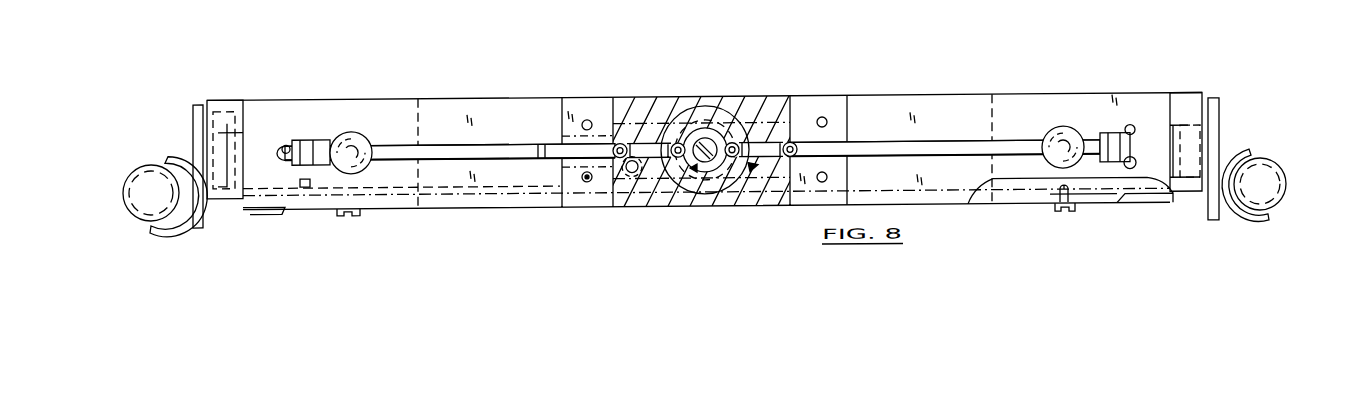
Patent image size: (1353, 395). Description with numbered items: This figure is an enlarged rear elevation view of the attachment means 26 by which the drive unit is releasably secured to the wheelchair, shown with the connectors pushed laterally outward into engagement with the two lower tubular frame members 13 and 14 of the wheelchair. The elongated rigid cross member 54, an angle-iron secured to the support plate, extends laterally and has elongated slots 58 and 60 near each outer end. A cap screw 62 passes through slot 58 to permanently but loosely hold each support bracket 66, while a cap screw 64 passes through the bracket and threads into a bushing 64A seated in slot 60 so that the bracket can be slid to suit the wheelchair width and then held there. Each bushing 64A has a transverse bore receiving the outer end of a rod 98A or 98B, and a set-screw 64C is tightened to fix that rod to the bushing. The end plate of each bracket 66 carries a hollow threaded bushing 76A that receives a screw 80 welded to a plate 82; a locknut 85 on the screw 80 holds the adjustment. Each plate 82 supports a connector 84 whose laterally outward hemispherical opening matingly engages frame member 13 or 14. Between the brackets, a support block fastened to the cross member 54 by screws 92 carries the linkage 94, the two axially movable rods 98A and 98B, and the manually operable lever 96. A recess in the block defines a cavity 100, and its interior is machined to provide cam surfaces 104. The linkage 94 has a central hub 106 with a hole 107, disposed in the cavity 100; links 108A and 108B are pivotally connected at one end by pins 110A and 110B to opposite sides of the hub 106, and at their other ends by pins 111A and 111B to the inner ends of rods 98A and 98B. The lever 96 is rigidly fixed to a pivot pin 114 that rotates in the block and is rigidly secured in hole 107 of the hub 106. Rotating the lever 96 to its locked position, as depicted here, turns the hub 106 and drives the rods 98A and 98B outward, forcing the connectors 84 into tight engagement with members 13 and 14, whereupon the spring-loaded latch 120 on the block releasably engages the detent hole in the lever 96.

The lower horizontal tubular frame member 13 is at (145, 162).
The lower horizontal tubular frame member 14 is at (1272, 162).
The attachment means 26 is at (902, 54).
The cross member 54 is at (470, 96).
The elongated slot 58 is at (273, 205).
The elongated slot 60 is at (286, 146).
The cap screw 62 is at (360, 212).
The cap screw 64 is at (357, 131).
The bushing 64A is at (363, 131).
The set-screw 64C is at (349, 130).
The support bracket 66 is at (241, 97).
The bushing 76A is at (262, 135).
The screw 80 is at (305, 184).
The plate 82 is at (196, 100).
The connector 84 is at (168, 150).
The locknut 85 is at (284, 138).
The screw 92 is at (823, 118).
The linkage 94 is at (740, 96).
The lever 96 is at (552, 135).
The rod 98A is at (447, 157).
The rod 98B is at (870, 142).
The cavity 100 is at (687, 118).
The cam surface 104 is at (657, 128).
The hub 106 is at (730, 143).
The hole 107 is at (712, 172).
The link 108A is at (672, 143).
The link 108B is at (792, 142).
The pin 110A is at (713, 110).
The pin 110B is at (763, 155).
The pin 111A is at (613, 143).
The pin 111B is at (836, 90).
The pivot pin 114 is at (725, 175).
The spring-loaded latch 120 is at (630, 172).